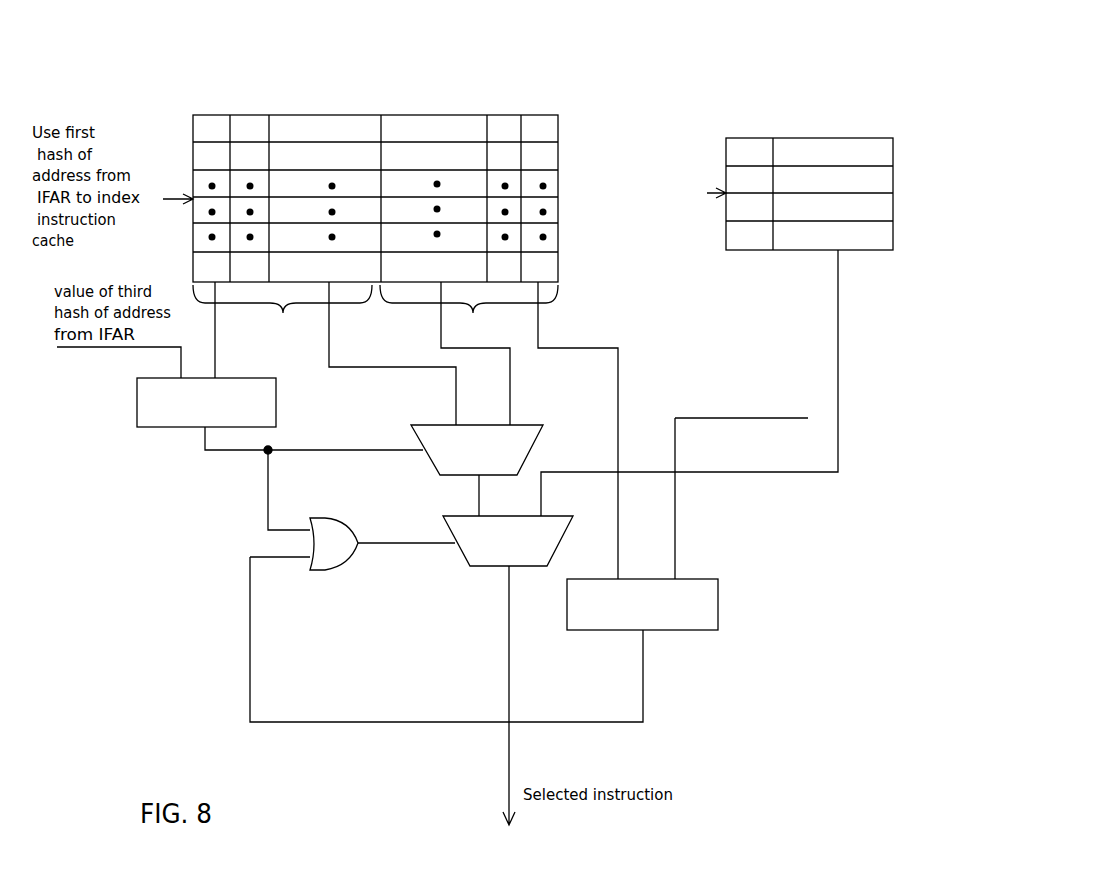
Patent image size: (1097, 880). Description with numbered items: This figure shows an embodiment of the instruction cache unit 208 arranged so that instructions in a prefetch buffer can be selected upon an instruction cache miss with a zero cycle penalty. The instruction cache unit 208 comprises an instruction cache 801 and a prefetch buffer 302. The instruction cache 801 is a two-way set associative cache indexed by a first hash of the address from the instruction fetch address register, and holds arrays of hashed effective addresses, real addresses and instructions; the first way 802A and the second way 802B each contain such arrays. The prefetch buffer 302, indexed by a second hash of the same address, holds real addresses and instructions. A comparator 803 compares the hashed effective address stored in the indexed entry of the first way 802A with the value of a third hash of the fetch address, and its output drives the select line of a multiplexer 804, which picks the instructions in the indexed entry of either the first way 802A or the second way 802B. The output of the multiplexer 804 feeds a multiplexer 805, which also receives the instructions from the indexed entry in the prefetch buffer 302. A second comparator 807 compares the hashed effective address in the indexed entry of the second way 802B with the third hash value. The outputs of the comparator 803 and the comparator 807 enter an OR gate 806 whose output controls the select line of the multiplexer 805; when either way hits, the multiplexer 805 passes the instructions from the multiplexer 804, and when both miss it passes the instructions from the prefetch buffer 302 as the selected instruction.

The instruction cache unit 208 is at (660, 68).
The instruction cache 801 is at (463, 113).
The first way 802A is at (324, 353).
The second way 802B is at (499, 430).
The comparator 803 is at (135, 405).
The multiplexer 804 is at (527, 425).
The multiplexer 805 is at (463, 563).
The OR gate 806 is at (335, 518).
The comparator 807 is at (720, 600).
The prefetch buffer 302 is at (868, 252).